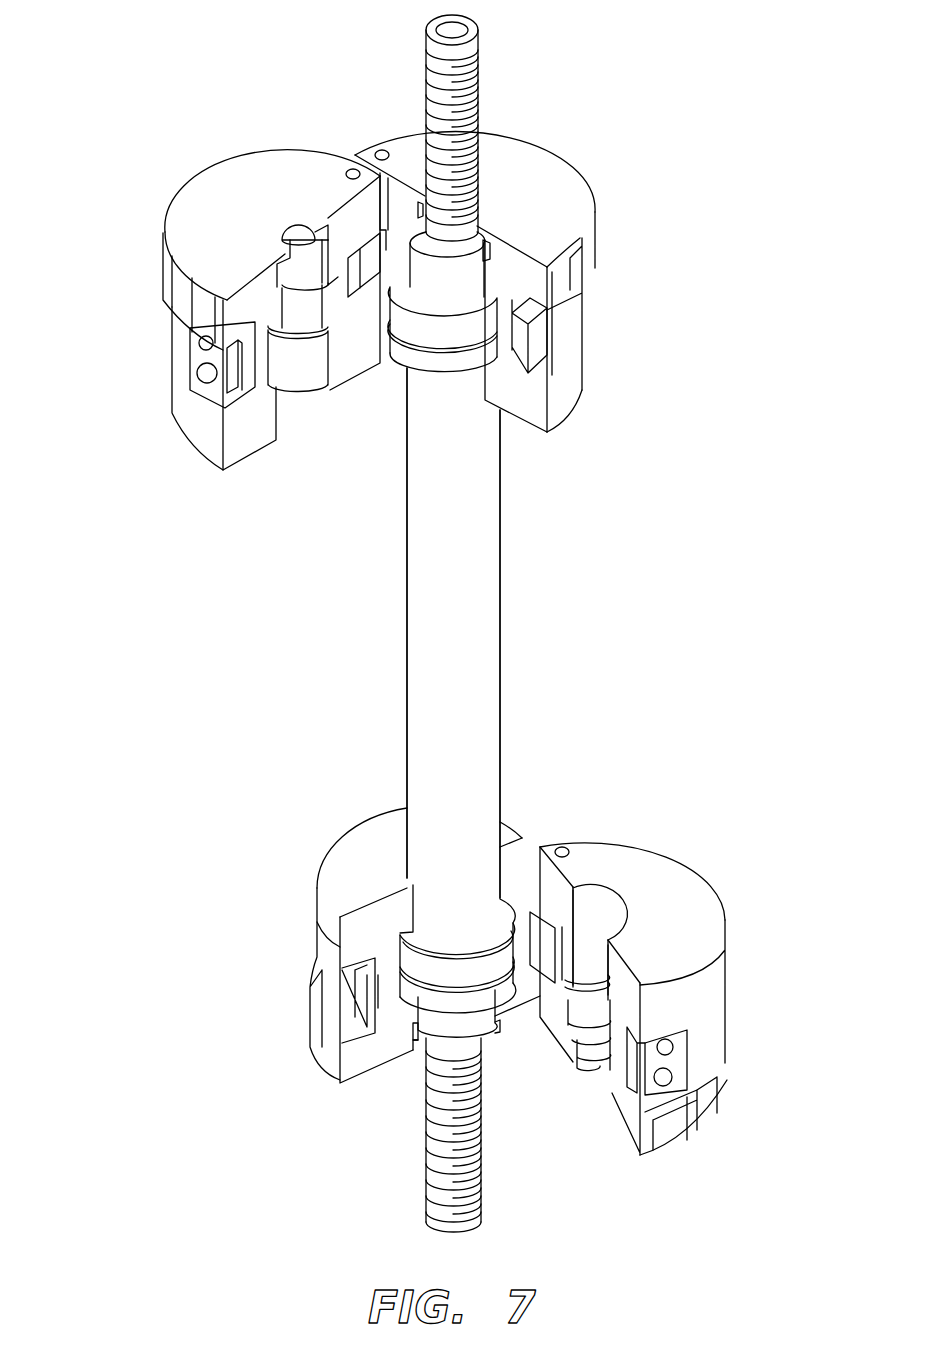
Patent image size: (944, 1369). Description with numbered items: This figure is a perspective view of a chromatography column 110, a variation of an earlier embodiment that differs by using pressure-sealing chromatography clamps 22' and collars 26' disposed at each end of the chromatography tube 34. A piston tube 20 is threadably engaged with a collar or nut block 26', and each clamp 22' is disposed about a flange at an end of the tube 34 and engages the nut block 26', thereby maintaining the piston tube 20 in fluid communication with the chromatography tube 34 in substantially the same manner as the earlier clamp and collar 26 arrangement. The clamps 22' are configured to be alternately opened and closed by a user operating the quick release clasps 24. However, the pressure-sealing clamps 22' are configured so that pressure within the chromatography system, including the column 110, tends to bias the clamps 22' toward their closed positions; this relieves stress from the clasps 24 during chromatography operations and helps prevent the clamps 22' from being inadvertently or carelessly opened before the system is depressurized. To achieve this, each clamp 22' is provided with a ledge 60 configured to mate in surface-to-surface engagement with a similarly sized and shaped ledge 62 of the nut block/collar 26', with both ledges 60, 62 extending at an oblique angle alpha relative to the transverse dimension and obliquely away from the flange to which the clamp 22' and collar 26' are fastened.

The chromatography column 110 is at (190, 58).
The piston tube 20 is at (477, 95).
The pressure-sealing chromatography clamp 22' is at (422, 652).
The quick release clasp 24 is at (558, 318).
The collar 26 is at (420, 312).
The collar or nut block 26' is at (464, 1001).
The chromatography tube 34 is at (502, 592).
The ledge 60 is at (583, 978).
The ledge 62 is at (401, 268).